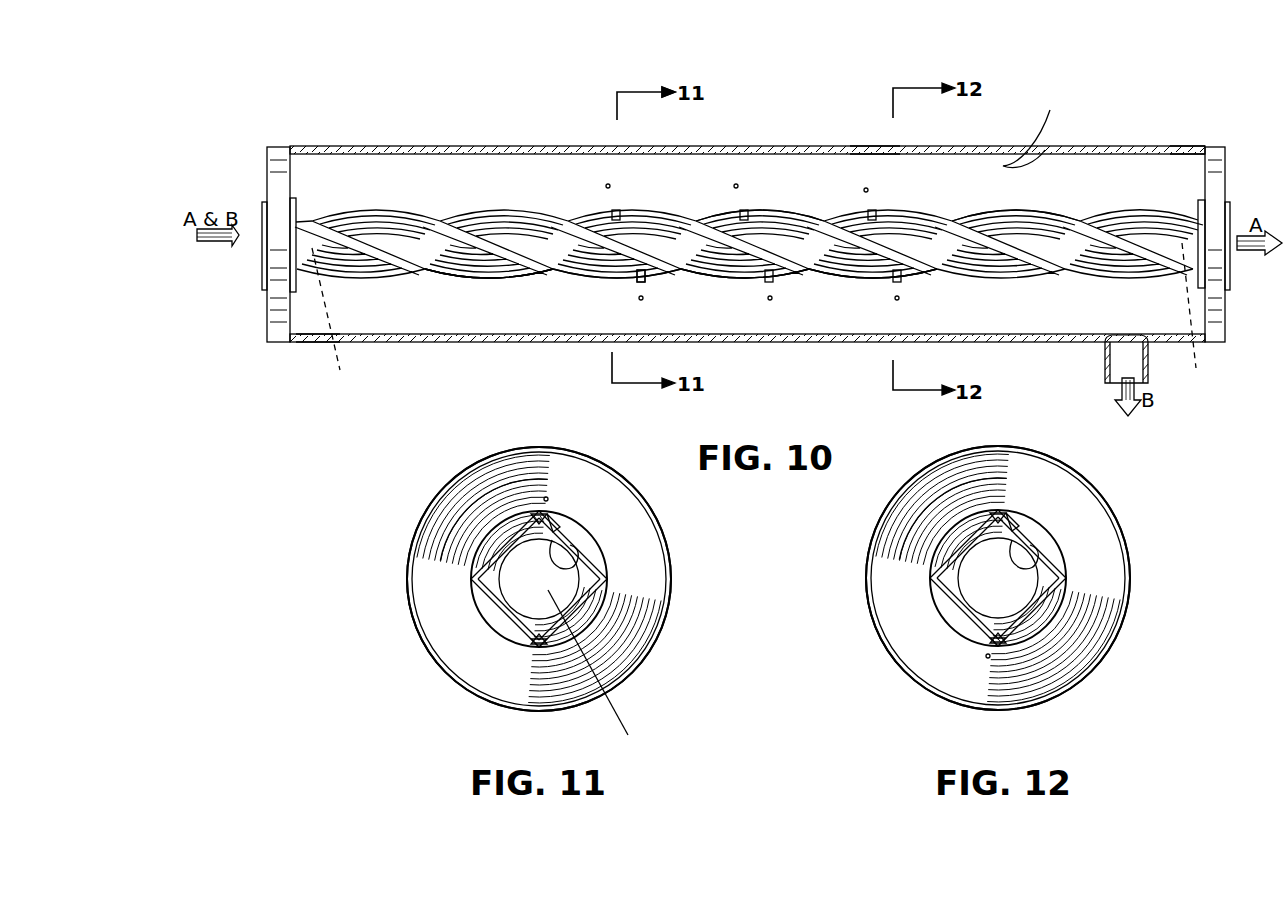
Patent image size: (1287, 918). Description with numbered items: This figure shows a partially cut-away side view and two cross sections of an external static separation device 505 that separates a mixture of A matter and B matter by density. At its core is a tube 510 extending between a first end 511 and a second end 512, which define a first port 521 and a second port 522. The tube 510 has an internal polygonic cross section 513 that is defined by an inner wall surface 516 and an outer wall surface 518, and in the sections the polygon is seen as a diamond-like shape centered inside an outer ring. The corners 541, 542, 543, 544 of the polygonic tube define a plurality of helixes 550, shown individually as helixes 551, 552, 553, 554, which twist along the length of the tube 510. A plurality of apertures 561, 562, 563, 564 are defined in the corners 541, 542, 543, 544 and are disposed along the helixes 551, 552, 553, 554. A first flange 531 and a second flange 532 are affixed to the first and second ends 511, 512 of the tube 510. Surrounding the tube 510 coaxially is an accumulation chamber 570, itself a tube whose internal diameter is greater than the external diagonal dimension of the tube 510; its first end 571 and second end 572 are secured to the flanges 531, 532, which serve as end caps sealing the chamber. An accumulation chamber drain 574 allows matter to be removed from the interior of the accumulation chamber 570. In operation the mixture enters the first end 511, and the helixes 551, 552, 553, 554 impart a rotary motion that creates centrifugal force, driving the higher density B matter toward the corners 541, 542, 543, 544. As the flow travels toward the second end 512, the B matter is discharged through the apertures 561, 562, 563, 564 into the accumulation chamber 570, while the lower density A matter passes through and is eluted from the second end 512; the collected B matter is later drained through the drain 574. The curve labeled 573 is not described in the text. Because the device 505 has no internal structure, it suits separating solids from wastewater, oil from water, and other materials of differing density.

In FIG. 10, the external static separation device 505 is at (446, 139).
In FIG. 11, the external static separation device 505 is at (346, 498).
In FIG. 12, the external static separation device 505 is at (1200, 496).
In FIG. 10, the tube 510 is at (522, 221).
In FIG. 11, the tube 510 is at (488, 533).
In FIG. 12, the tube 510 is at (948, 533).
In FIG. 10, the first end 511 is at (330, 147).
In FIG. 10, the second end 512 is at (1190, 222).
In FIG. 10, the internal polygonic cross section 513 is at (797, 221).
In FIG. 11, the internal polygonic cross section 513 is at (577, 552).
In FIG. 12, the internal polygonic cross section 513 is at (1037, 552).
In FIG. 11, the inner wall surface 516 is at (552, 540).
In FIG. 10, the outer wall surface 518 is at (934, 209).
In FIG. 11, the outer wall surface 518 is at (603, 672).
In FIG. 10, the first port 521 is at (336, 320).
In FIG. 10, the second port 522 is at (1201, 319).
In FIG. 11, the second port 522 is at (567, 600).
In FIG. 12, the second port 522 is at (1008, 589).
In FIG. 10, the first flange 531 is at (280, 147).
In FIG. 10, the second flange 532 is at (1218, 147).
In FIG. 11, the second flange 532 is at (633, 542).
In FIG. 12, the second flange 532 is at (1093, 542).
In FIG. 10, the corner 541 is at (515, 280).
In FIG. 11, the corner 541 is at (607, 580).
In FIG. 12, the corner 541 is at (932, 581).
In FIG. 10, the corner 542 is at (645, 279).
In FIG. 11, the corner 542 is at (543, 648).
In FIG. 12, the corner 542 is at (998, 511).
In FIG. 10, the corner 543 is at (782, 279).
In FIG. 11, the corner 543 is at (472, 581).
In FIG. 12, the corner 543 is at (1067, 578).
In FIG. 10, the corner 544 is at (934, 273).
In FIG. 11, the corner 544 is at (539, 511).
In FIG. 12, the corner 544 is at (1003, 648).
In FIG. 10, the plurality of helixes 550 is at (482, 276).
In FIG. 10, the helix 551 is at (503, 278).
In FIG. 11, the helix 551 is at (600, 595).
In FIG. 12, the helix 551 is at (931, 578).
In FIG. 10, the helix 552 is at (607, 280).
In FIG. 11, the helix 552 is at (535, 648).
In FIG. 12, the helix 552 is at (1020, 512).
In FIG. 10, the helix 553 is at (745, 279).
In FIG. 11, the helix 553 is at (480, 583).
In FIG. 12, the helix 553 is at (1060, 597).
In FIG. 10, the helix 554 is at (885, 281).
In FIG. 11, the helix 554 is at (563, 514).
In FIG. 12, the helix 554 is at (994, 648).
In FIG. 10, the aperture 561 is at (740, 211).
In FIG. 10, the aperture 562 is at (868, 208).
In FIG. 10, the aperture 563 is at (767, 283).
In FIG. 10, the aperture 564 is at (612, 211).
In FIG. 11, the aperture 564 is at (533, 512).
In FIG. 12, the aperture 564 is at (990, 659).
In FIG. 10, the accumulation chamber 570 is at (868, 146).
In FIG. 11, the accumulation chamber 570 is at (425, 645).
In FIG. 12, the accumulation chamber 570 is at (884, 645).
In FIG. 10, the first end 571 is at (317, 345).
In FIG. 10, the second end 572 is at (1188, 146).
In FIG. 11, the second end 572 is at (633, 673).
In FIG. 12, the second end 572 is at (1092, 672).
In FIG. 10, the fluid path 573 is at (1038, 126).
In FIG. 10, the accumulation chamber drain 574 is at (1107, 365).